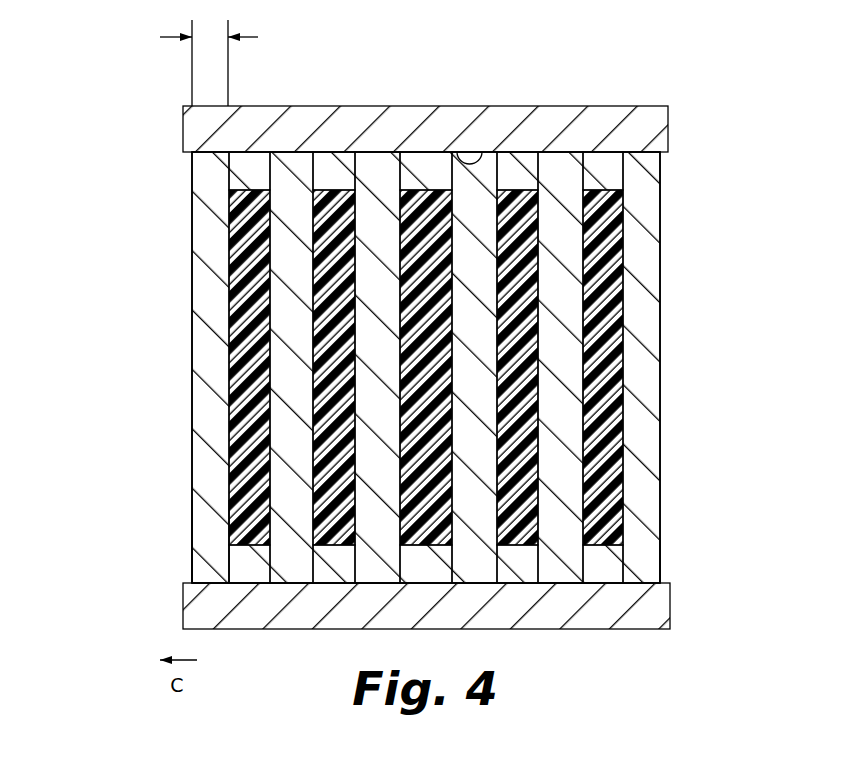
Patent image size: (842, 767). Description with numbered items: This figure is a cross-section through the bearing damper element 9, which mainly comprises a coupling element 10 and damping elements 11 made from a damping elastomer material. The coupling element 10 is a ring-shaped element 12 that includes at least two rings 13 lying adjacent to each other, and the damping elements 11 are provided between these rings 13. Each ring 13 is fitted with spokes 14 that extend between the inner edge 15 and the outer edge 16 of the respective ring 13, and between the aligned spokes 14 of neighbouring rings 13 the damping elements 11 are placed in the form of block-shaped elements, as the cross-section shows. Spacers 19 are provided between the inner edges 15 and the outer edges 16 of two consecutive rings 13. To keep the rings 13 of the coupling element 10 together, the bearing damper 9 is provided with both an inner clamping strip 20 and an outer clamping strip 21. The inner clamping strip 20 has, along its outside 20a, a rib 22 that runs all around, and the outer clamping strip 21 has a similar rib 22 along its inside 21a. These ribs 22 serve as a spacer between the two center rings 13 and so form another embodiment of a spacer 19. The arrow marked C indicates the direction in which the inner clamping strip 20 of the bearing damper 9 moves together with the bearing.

The bearing damper element 9 is at (167, 82).
The coupling element 10 is at (715, 300).
The damping element 11 is at (327, 290).
The ring-shaped element 12 is at (115, 295).
The ring 13 is at (383, 560).
The spoke 14 is at (227, 419).
The inner edge 15 is at (207, 557).
The outer edge 16 is at (212, 168).
The spacer 19 is at (337, 162).
The inner clamping strip 20 is at (657, 625).
The outside of the inner clamping strip 20a is at (550, 583).
The outer clamping strip 21 is at (377, 132).
The inside of the outer clamping strip 21a is at (457, 157).
The rib 22 is at (430, 178).